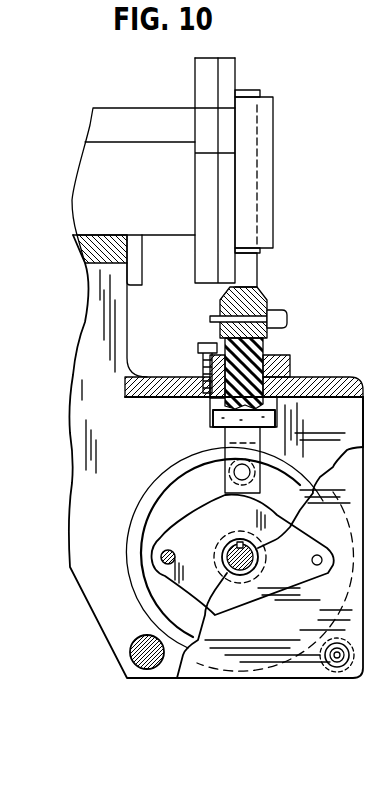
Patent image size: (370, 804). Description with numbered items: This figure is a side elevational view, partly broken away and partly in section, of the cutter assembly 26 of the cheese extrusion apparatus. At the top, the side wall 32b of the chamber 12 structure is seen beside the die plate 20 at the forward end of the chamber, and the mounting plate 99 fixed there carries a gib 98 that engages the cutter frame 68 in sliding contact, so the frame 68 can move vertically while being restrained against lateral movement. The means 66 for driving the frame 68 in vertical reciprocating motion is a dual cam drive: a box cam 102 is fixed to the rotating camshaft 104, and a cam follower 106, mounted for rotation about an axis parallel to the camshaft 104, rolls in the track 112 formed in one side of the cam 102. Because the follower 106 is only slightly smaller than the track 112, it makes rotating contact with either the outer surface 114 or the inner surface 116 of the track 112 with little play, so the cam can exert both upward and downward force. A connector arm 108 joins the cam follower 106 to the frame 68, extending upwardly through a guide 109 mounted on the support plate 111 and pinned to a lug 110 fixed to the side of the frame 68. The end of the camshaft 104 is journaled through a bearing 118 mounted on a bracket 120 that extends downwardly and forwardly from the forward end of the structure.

The chamber 12 is at (365, 375).
The die plate 20 is at (229, 56).
The cutter assembly 26 is at (193, 693).
The side wall 32b is at (141, 187).
The means for driving the cutting elements 66 is at (310, 690).
The frame 68 is at (247, 88).
The gib 98 is at (273, 125).
The mounting plate 99 is at (205, 73).
The cam 102 is at (165, 463).
The camshaft 104 is at (260, 553).
The cam follower 106 is at (270, 447).
The connector arm 108 is at (270, 343).
The guide 109 is at (297, 368).
The lug 110 is at (263, 287).
The support plate 111 is at (153, 375).
The track 112 is at (180, 497).
The outer surface of the track 114 is at (208, 462).
The inner surface of the track 116 is at (207, 513).
The bearing 118 is at (197, 555).
The bracket 120 is at (80, 352).